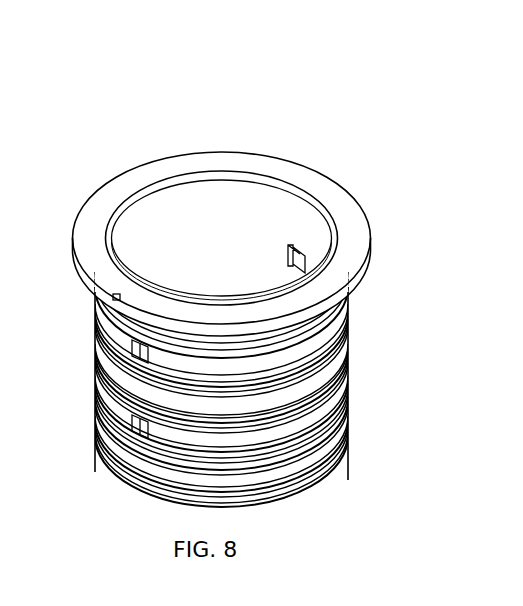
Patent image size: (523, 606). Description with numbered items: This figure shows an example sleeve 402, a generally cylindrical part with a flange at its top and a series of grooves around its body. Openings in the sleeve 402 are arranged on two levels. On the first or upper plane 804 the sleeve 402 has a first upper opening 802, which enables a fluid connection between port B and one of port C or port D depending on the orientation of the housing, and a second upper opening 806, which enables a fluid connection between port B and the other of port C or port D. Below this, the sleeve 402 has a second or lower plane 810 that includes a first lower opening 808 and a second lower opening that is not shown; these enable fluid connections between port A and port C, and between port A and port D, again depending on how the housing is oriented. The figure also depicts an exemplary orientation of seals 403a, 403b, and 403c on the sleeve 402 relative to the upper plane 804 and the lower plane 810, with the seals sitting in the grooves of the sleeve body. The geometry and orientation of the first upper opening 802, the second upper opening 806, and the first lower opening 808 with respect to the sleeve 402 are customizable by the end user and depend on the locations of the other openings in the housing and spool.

The sleeve 402 is at (183, 113).
The second upper opening 806 is at (298, 248).
The seal 403a is at (348, 337).
The first or upper plane 804 is at (265, 358).
The seal 403b is at (348, 383).
The seal 403c is at (320, 442).
The first upper opening 802 is at (140, 349).
The first lower opening 808 is at (140, 420).
The second or lower plane 810 is at (243, 442).